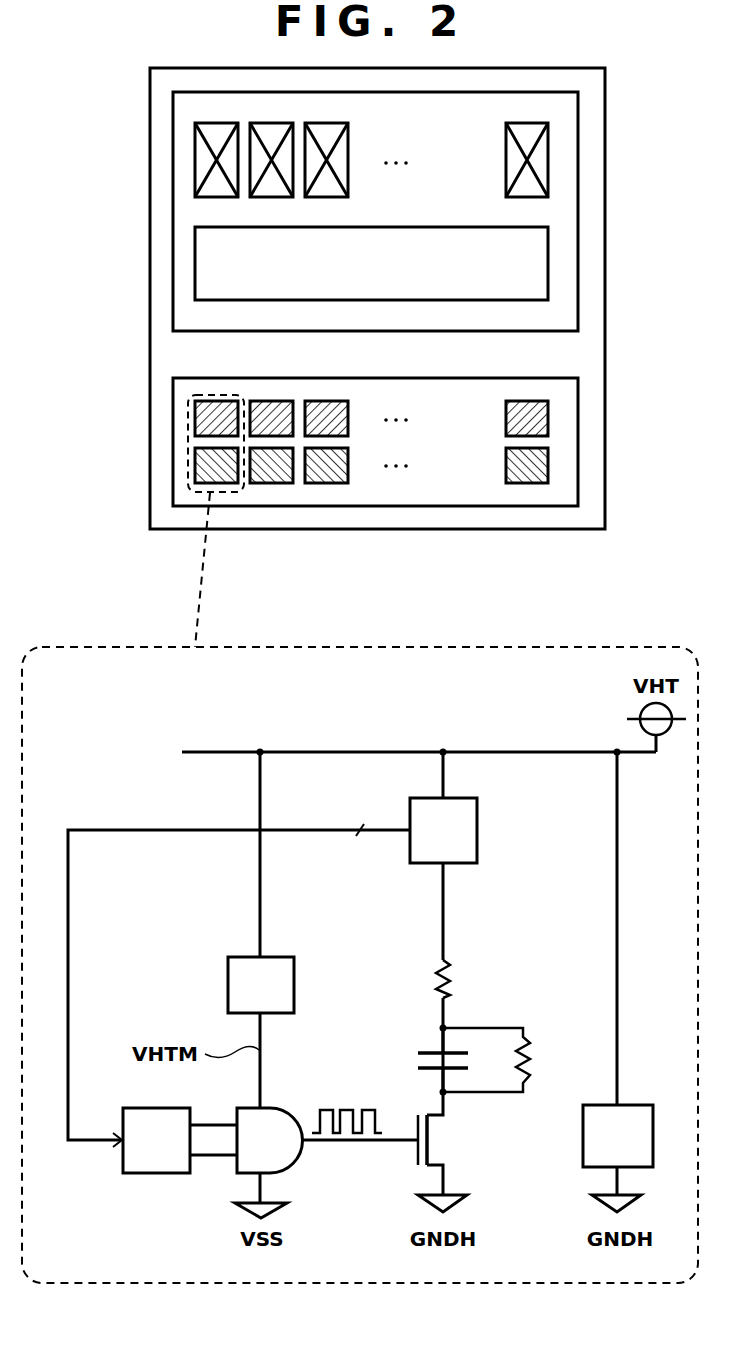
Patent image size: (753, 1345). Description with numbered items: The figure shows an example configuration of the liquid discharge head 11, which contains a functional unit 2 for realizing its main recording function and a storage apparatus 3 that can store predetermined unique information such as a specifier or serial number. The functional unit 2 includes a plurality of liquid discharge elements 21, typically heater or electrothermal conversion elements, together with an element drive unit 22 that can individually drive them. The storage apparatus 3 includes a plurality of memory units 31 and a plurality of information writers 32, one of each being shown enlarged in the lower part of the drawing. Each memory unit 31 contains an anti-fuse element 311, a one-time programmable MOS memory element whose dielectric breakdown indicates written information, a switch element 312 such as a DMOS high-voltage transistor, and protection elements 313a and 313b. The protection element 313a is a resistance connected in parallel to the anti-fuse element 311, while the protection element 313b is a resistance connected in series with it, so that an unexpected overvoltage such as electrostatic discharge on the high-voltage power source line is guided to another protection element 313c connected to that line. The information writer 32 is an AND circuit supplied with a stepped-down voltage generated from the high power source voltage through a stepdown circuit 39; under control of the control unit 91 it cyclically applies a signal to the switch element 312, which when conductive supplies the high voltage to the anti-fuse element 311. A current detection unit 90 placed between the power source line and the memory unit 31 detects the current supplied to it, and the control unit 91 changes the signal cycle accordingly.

The liquid discharge head 11 is at (183, 68).
The functional unit 2 is at (553, 91).
The liquid discharge element 21 is at (557, 159).
The element drive unit 22 is at (371, 263).
The storage apparatus 3 is at (458, 507).
The information writer 32 is at (557, 414).
The memory unit 31 is at (557, 465).
The current detection unit 90 is at (443, 830).
The stepdown circuit 39 is at (261, 985).
The control unit 91 is at (156, 1140).
The protection element 313b is at (461, 983).
The protection element 313a is at (533, 1038).
The anti-fuse element 311 is at (411, 1058).
The switch element 312 is at (446, 1139).
The protection element 313c is at (618, 1136).